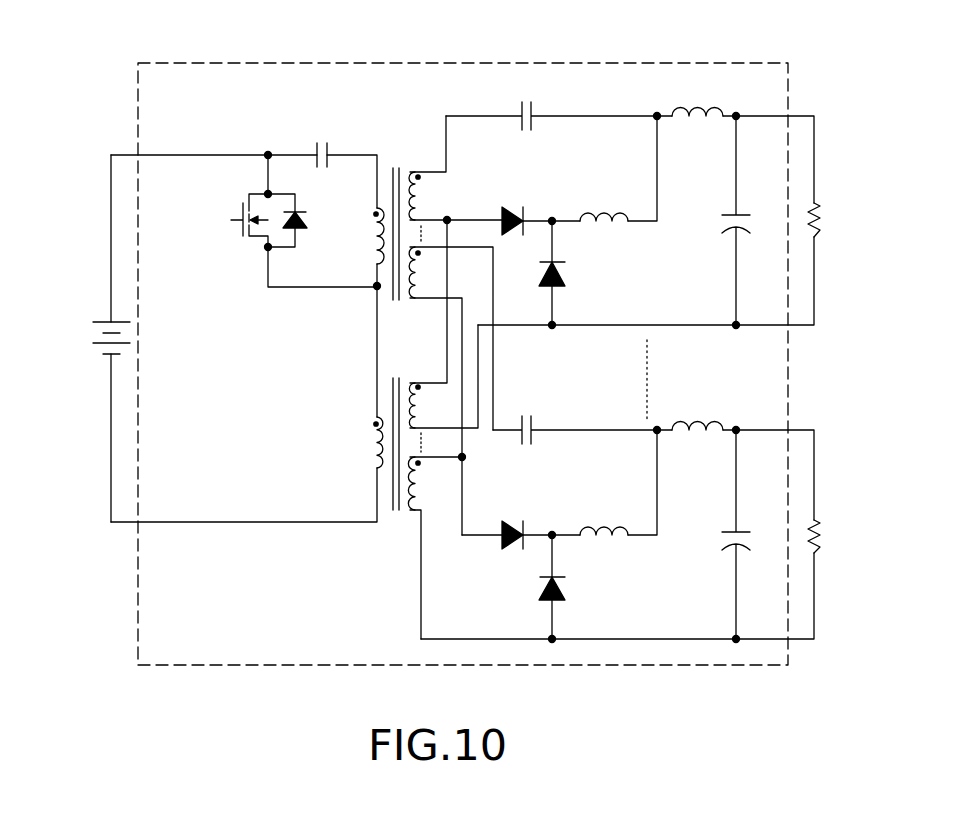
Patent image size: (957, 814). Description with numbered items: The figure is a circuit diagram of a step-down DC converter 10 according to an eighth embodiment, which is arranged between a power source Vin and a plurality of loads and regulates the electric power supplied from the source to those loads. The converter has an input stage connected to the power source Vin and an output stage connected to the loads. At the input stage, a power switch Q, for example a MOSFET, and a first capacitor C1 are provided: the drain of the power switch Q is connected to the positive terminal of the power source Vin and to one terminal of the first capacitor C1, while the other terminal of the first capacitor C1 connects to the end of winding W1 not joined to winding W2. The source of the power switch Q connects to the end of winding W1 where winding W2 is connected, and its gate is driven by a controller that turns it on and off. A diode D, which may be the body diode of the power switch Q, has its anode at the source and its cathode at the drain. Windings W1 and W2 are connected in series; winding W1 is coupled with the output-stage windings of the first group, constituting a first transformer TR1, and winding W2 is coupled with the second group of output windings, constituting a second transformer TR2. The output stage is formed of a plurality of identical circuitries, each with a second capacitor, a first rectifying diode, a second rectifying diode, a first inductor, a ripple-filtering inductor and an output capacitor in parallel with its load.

The step-down DC converter 10 is at (489, 67).
The power source Vin is at (89, 338).
The first capacitor C1 is at (320, 141).
The power switch Q is at (239, 221).
The diode D is at (294, 220).
The first transformer TR1 is at (398, 221).
The second transformer TR2 is at (399, 460).
The winding W1 is at (376, 229).
The winding W2 is at (376, 439).